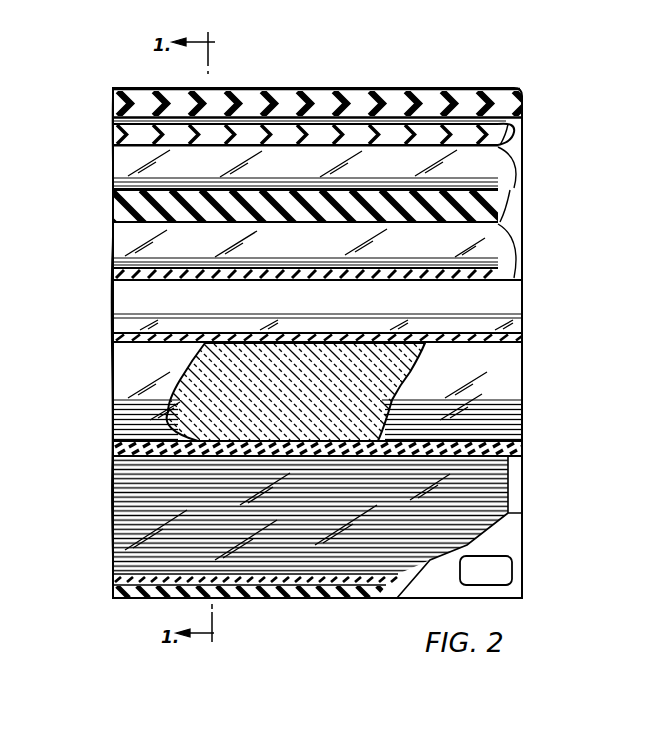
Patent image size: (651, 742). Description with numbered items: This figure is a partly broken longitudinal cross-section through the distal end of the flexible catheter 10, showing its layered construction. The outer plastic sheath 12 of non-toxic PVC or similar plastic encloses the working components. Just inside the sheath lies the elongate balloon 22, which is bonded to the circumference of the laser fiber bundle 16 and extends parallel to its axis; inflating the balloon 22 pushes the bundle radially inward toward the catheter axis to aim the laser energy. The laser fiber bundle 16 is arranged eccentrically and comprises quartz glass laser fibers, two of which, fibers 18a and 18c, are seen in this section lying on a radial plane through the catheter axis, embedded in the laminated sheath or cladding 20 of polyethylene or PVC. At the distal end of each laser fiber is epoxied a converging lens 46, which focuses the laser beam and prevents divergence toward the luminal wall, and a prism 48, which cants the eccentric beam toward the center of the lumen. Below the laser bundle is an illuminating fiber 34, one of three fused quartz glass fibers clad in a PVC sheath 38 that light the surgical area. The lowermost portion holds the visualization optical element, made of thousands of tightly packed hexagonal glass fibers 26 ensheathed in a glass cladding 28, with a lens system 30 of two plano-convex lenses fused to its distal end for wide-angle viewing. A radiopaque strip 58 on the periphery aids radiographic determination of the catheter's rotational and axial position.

The flexible catheter 10 is at (440, 80).
The plastic sheath 12 is at (254, 92).
The elongate balloon 22 is at (397, 104).
The quartz glass laser fiber 18a is at (406, 170).
The quartz glass laser fiber 18c is at (380, 248).
The laminated sheath or cladding 20 is at (114, 206).
The laser fiber bundle 16 is at (432, 274).
The PVC sheath 38 is at (512, 337).
The fused quartz glass fiber 34 is at (317, 403).
The lens system 30 is at (522, 478).
The glass cladding 28 is at (288, 590).
The glass fibers 26 is at (372, 553).
The radiopaque strip 58 is at (510, 571).
The prism 48 is at (516, 138).
The converging lens 46 is at (520, 165).